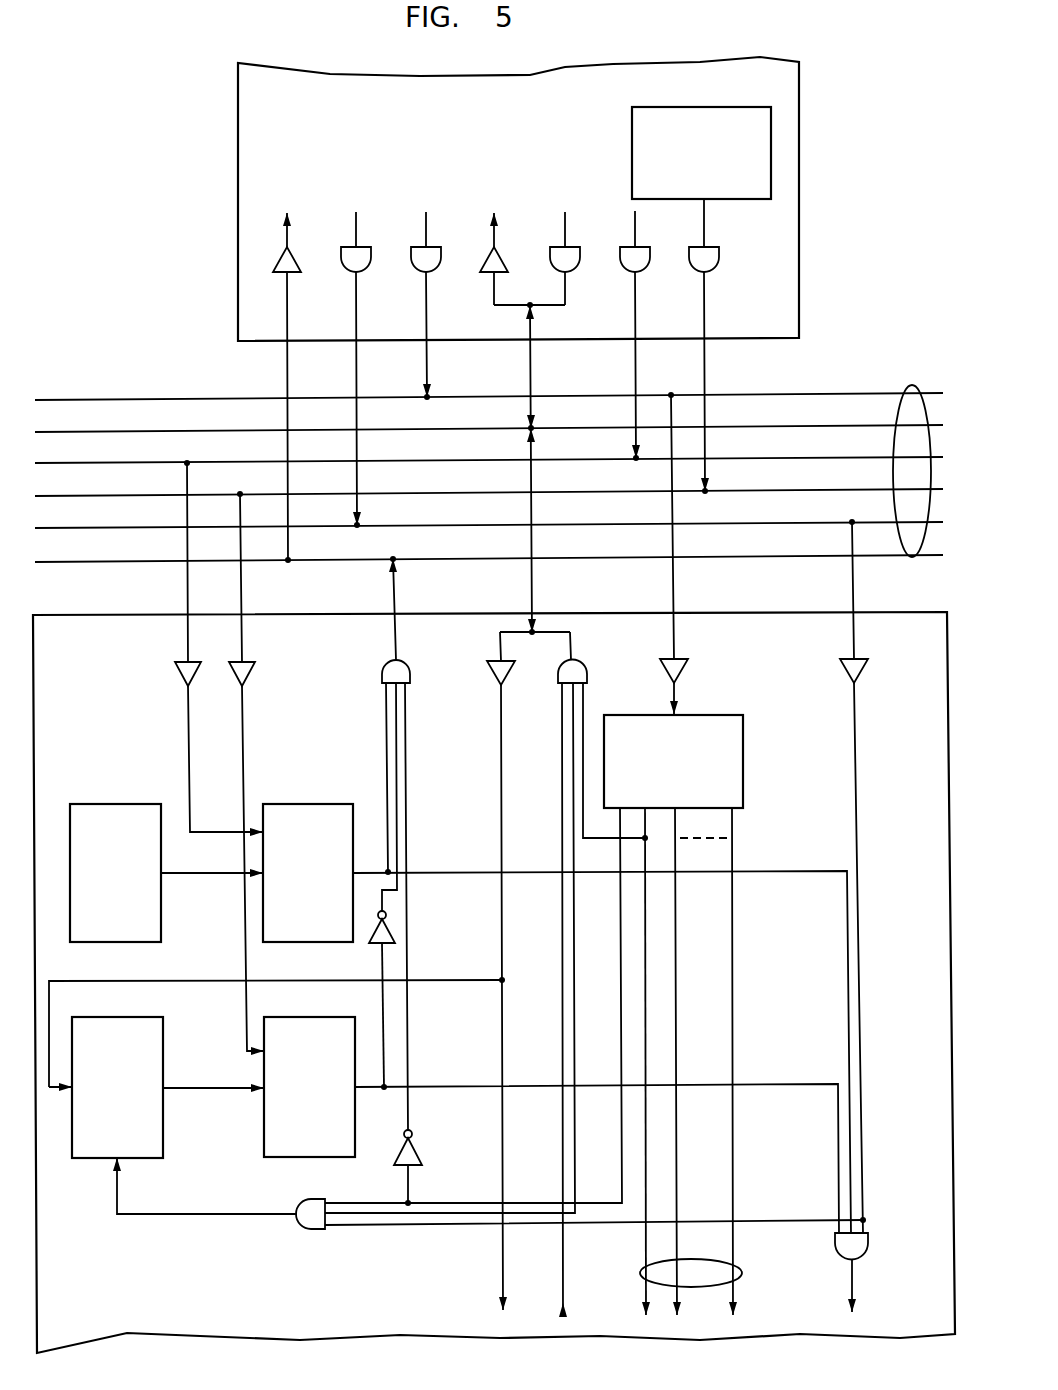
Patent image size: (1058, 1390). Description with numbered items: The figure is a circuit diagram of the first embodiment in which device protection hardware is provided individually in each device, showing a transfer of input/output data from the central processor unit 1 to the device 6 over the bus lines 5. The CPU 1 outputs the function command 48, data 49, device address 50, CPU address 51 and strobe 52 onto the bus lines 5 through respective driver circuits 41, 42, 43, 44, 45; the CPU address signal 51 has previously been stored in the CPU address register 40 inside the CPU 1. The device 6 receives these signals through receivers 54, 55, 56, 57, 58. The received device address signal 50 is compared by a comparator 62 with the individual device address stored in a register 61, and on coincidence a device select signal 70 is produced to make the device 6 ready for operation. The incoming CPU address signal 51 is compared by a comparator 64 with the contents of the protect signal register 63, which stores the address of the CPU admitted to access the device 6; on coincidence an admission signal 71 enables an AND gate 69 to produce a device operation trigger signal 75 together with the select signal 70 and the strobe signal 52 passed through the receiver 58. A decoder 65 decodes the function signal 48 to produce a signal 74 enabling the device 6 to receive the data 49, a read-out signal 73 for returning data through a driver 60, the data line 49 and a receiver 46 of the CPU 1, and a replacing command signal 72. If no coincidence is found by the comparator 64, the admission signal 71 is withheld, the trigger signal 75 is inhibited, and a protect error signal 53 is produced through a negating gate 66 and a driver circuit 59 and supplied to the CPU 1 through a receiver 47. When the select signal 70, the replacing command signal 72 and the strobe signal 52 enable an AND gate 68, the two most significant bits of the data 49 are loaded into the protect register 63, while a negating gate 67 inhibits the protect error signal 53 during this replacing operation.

The central processor unit 1 is at (801, 153).
The bus lines 5 is at (908, 385).
The device 6 is at (908, 611).
The CPU address register 40 is at (632, 152).
The driver circuit 41 is at (728, 239).
The driver circuit 42 is at (660, 239).
The driver circuit 43 is at (598, 276).
The driver circuit 44 is at (452, 239).
The driver circuit 45 is at (389, 276).
The receiver 46 is at (525, 277).
The receiver 47 is at (318, 275).
The function command signal 48 is at (488, 390).
The data 49 is at (58, 1105).
The device address signal 50 is at (488, 453).
The CPU address signal 51 is at (488, 486).
The strobe signal 52 is at (488, 518).
The protect error signal 53 is at (488, 565).
The receiver 54 is at (176, 666).
The receiver 55 is at (256, 666).
The receiver 56 is at (488, 667).
The receiver 57 is at (660, 666).
The receiver 58 is at (840, 666).
The driver circuit 59 is at (382, 668).
The driver 60 is at (558, 667).
The device address register 61 is at (117, 803).
The comparator 62 is at (310, 803).
The protect signal register 63 is at (110, 1016).
The comparator 64 is at (315, 1008).
The function command decoder 65 is at (744, 757).
The negating gate 66 is at (395, 918).
The negating gate 67 is at (420, 1157).
The AND gate 68 is at (315, 1199).
The AND gate 69 is at (868, 1238).
The device select signal 70 is at (468, 872).
The admission signal 71 is at (467, 1085).
The replacing command signal 72 is at (467, 1205).
The read-out signal 73 is at (644, 1240).
The data receive enabling signal 74 is at (642, 1273).
The device operation trigger signal 75 is at (853, 1290).